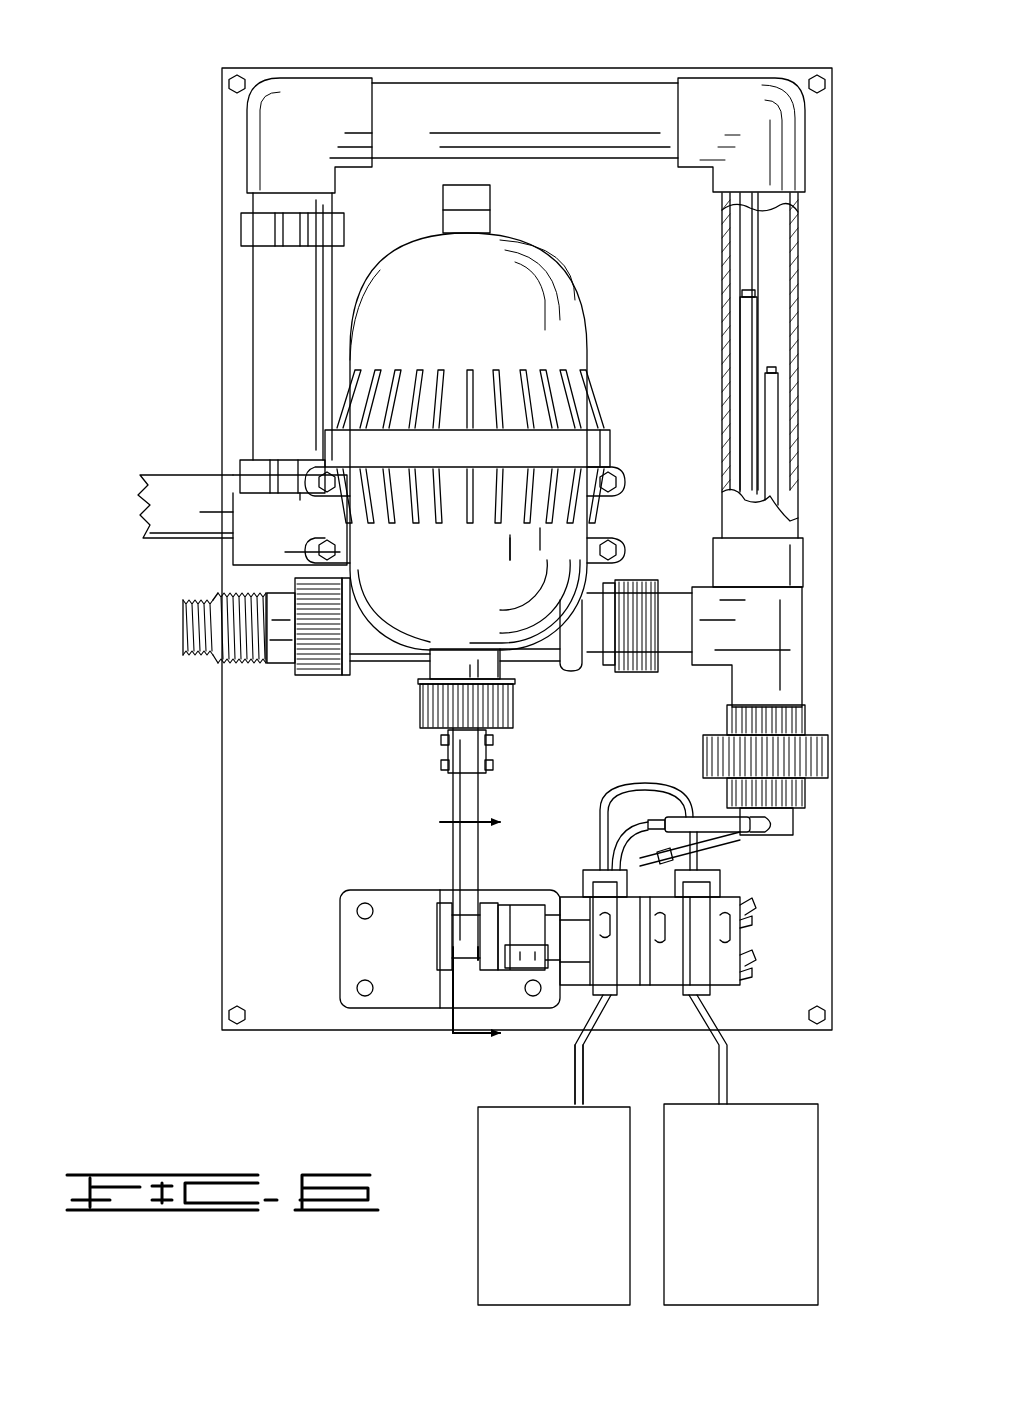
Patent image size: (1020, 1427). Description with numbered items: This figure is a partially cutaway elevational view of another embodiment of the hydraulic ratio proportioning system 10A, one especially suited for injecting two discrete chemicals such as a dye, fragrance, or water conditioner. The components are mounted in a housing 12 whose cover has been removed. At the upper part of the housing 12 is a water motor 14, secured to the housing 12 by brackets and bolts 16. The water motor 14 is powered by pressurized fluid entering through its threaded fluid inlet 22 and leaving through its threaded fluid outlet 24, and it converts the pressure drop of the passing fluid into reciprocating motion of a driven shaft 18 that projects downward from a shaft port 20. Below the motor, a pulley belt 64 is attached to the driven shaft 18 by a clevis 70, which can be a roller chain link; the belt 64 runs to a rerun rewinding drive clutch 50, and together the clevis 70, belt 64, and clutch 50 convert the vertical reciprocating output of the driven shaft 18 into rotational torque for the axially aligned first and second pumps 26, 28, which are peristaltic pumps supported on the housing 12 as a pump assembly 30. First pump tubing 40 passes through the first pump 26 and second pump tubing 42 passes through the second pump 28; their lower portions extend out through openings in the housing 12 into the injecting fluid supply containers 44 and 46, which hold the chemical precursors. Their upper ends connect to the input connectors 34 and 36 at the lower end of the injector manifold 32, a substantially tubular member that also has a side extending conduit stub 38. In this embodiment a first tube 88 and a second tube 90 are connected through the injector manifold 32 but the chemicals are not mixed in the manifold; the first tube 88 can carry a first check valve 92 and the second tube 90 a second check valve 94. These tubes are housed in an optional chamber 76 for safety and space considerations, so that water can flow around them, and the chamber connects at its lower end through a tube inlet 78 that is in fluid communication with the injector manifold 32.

The water heater assembly 10A is at (178, 82).
The housing 12 is at (428, 70).
The water motor 14 is at (548, 243).
The brackets and bolts 16 is at (618, 476).
The driven shaft 18 is at (452, 765).
The shaft port 20 is at (430, 728).
The fluid inlet 22 is at (295, 592).
The fluid outlet 24 is at (140, 503).
The first pump 26 is at (580, 1000).
The second pump 28 is at (722, 1003).
The valve 30 is at (580, 882).
The injector manifold 32 is at (815, 795).
The input connector 34 is at (705, 820).
The input connector 36 is at (722, 843).
The conduit stub 38 is at (712, 668).
The first pump tubing 40 is at (600, 823).
The second pump tubing 42 is at (592, 830).
The injecting fluid supply container 44 is at (480, 1245).
The injecting fluid supply container 46 is at (797, 1230).
The rerun rewinding drive clutch 50 is at (500, 980).
The pulley belt 64 is at (453, 868).
The clevis 70 is at (490, 747).
The chamber 76 is at (798, 212).
The tube inlet 78 is at (760, 537).
The first tube 88 is at (740, 340).
The second tube 90 is at (780, 392).
The first check valve 92 is at (745, 292).
The second check valve 94 is at (775, 370).